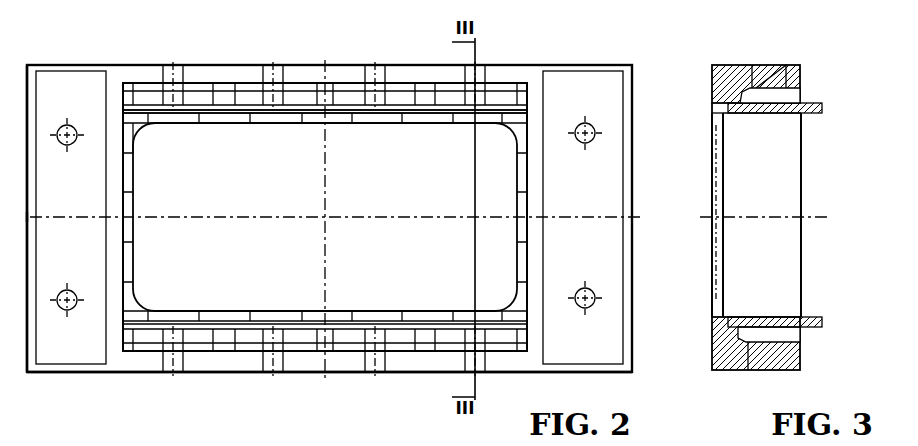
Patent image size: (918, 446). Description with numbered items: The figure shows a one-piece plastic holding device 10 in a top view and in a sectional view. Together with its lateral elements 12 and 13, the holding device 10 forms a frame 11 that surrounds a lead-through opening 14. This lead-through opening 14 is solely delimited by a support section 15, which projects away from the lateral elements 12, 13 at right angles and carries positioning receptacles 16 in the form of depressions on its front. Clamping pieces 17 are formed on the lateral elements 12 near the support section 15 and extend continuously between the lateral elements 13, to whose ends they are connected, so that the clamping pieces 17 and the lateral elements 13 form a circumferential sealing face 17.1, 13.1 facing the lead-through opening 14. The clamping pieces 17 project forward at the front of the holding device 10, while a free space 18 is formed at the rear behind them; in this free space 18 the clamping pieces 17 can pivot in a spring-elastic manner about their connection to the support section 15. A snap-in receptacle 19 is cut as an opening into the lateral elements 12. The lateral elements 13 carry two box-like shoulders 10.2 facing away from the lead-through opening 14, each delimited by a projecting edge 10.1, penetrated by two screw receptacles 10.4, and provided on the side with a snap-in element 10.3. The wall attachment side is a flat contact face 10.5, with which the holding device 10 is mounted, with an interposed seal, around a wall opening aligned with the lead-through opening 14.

In FIG. 2, the holding device 10 is at (218, 383).
In FIG. 3, the holding device 10 is at (805, 268).
In FIG. 2, the projecting edge 10.1 is at (47, 65).
In FIG. 2, the shoulder 10.2 is at (86, 82).
In FIG. 2, the snap-in element 10.3 is at (33, 217).
In FIG. 2, the screw receptacle 10.4 is at (67, 310).
In FIG. 3, the contact face 10.5 is at (712, 330).
In FIG. 2, the frame 11 is at (532, 68).
In FIG. 2, the lateral element 12 is at (205, 65).
In FIG. 3, the lateral element 12 is at (797, 65).
In FIG. 2, the lateral element 13 is at (537, 150).
In FIG. 3, the lateral element 13 is at (803, 293).
In FIG. 2, the sealing face 13.1 is at (137, 230).
In FIG. 3, the sealing face 13.1 is at (778, 228).
In FIG. 2, the lead-through opening 14 is at (288, 297).
In FIG. 3, the lead-through opening 14 is at (710, 203).
In FIG. 2, the support section 15 is at (136, 128).
In FIG. 3, the support section 15 is at (716, 115).
In FIG. 2, the positioning receptacle 16 is at (283, 113).
In FIG. 2, the clamping piece 17 is at (363, 113).
In FIG. 3, the clamping piece 17 is at (812, 113).
In FIG. 2, the sealing face 17.1 is at (423, 123).
In FIG. 3, the sealing face 17.1 is at (765, 115).
In FIG. 3, the free space 18 is at (786, 90).
In FIG. 2, the snap-in receptacle 19 is at (265, 65).
In FIG. 3, the snap-in receptacle 19 is at (760, 372).